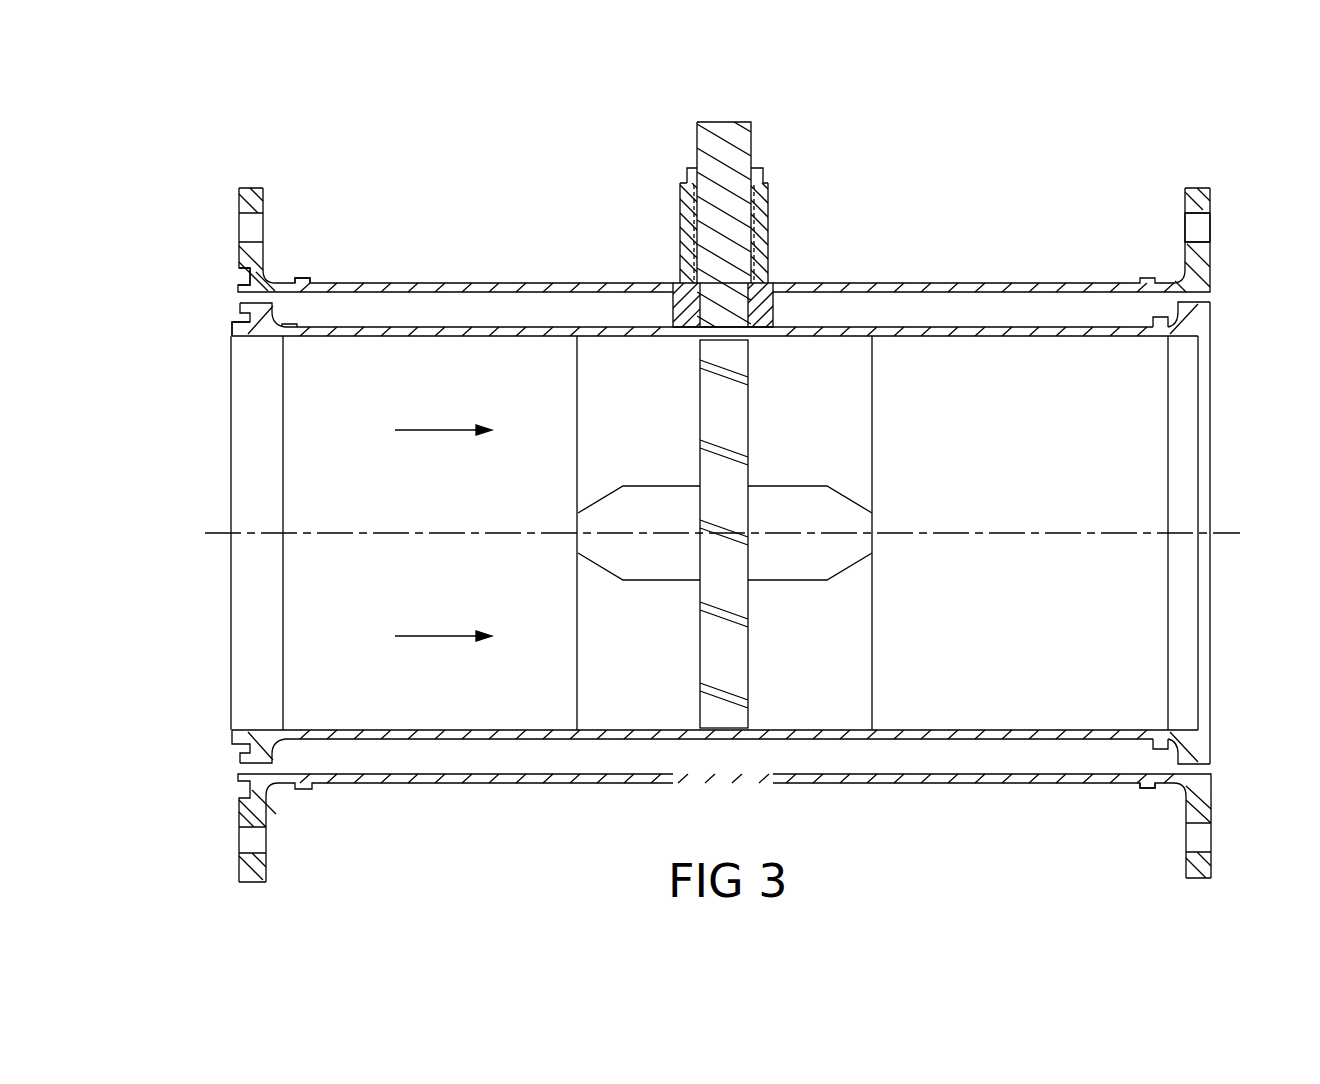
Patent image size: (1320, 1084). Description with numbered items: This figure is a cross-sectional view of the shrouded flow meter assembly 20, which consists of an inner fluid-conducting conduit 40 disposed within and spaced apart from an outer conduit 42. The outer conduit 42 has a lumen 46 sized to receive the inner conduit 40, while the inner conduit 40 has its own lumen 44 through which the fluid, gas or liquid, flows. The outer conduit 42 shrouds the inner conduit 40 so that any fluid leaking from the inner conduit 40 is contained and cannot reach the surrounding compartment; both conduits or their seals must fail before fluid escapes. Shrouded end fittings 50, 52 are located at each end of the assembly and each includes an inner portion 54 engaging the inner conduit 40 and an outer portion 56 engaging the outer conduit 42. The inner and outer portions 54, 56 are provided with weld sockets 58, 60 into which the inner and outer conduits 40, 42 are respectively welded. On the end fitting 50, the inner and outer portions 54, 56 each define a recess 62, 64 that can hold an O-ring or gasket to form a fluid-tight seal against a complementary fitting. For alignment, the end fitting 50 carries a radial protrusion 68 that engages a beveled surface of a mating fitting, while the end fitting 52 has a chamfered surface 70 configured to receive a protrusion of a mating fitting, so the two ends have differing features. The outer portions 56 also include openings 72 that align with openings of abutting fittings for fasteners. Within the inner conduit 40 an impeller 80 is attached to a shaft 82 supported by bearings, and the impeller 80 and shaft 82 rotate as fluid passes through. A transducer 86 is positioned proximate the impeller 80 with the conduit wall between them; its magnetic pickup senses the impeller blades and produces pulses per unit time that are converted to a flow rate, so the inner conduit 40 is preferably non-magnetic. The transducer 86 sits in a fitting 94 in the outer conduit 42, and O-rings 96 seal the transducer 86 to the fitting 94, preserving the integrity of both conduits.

The shrouded flow meter assembly 20 is at (575, 140).
The inner fluid-conducting conduit 40 is at (1040, 336).
The outer conduit 42 is at (980, 287).
The lumen 44 is at (1048, 454).
The lumen 46 is at (1008, 305).
The shrouded end fitting 50 is at (238, 178).
The shrouded end fitting 52 is at (1200, 178).
The inner portion 54 is at (1195, 310).
The outer portion 56 is at (1192, 200).
The weld socket 58 is at (287, 330).
The weld socket 60 is at (305, 280).
The recess 62 is at (240, 316).
The recess 64 is at (240, 273).
The radial protrusion 68 is at (230, 338).
The chamfered surface 70 is at (1205, 732).
The openings 72 is at (1200, 228).
The impeller 80 is at (740, 428).
The shaft 82 is at (832, 505).
The transducer 86 is at (708, 148).
The fitting 94 is at (683, 232).
The O-rings 96 is at (757, 182).